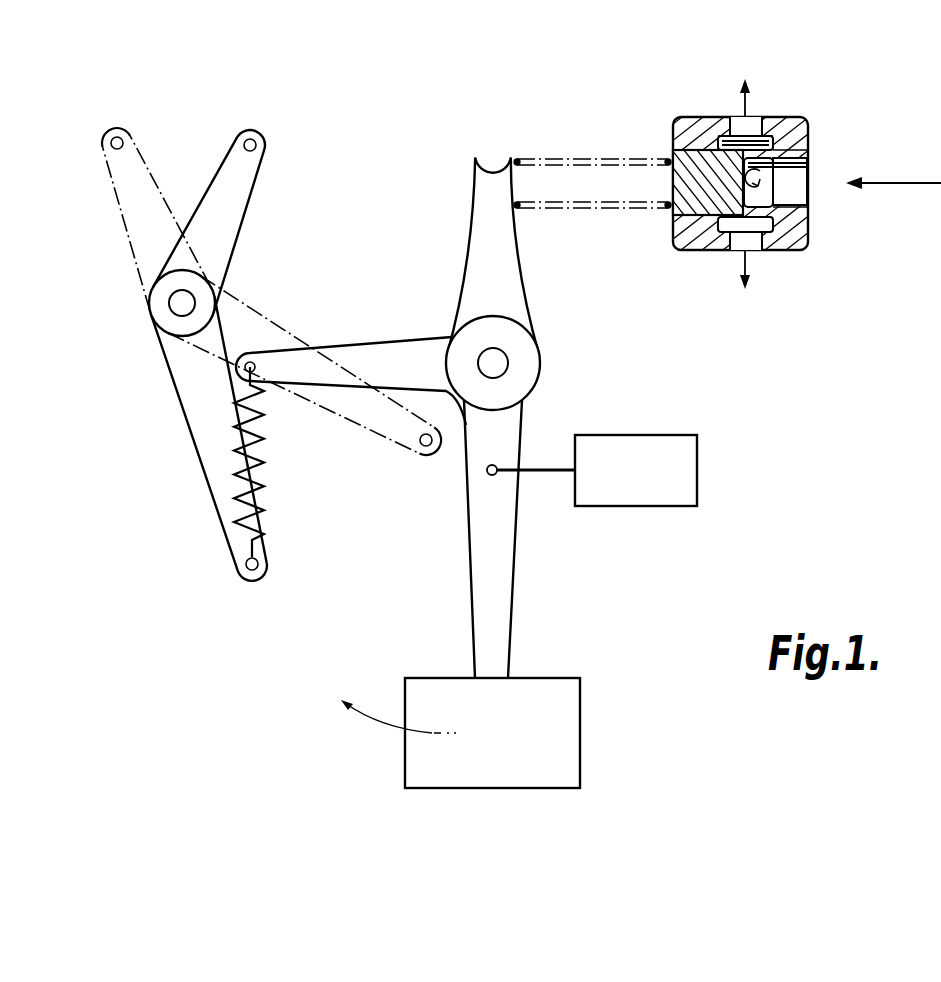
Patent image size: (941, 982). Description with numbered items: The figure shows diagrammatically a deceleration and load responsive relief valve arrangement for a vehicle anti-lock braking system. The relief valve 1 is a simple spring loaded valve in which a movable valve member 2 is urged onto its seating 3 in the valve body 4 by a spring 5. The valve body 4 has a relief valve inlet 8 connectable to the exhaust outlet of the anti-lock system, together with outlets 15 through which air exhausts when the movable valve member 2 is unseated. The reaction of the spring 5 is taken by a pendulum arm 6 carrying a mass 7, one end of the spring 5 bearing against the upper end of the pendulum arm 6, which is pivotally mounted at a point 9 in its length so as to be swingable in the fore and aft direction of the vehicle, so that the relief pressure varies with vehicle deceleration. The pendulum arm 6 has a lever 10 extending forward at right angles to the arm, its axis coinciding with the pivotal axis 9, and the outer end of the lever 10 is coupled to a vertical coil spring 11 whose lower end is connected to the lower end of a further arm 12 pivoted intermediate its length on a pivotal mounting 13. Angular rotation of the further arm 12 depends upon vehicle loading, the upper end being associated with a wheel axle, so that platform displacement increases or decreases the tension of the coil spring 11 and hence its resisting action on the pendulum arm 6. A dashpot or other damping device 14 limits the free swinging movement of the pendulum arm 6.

The relief valve 1 is at (818, 124).
The movable valve member 2 is at (673, 215).
The seating 3 is at (785, 178).
The valve body 4 is at (792, 237).
The spring 5 is at (568, 207).
The pendulum arm 6 is at (503, 289).
The mass 7 is at (560, 729).
The relief valve inlet 8 is at (797, 194).
The pivotal axis 9 is at (500, 364).
The lever 10 is at (406, 349).
The coil spring 11 is at (255, 468).
The further arm 12 is at (214, 470).
The pivotal mounting 13 is at (173, 305).
The damping device 14 is at (683, 459).
The outlets 15 is at (752, 127).